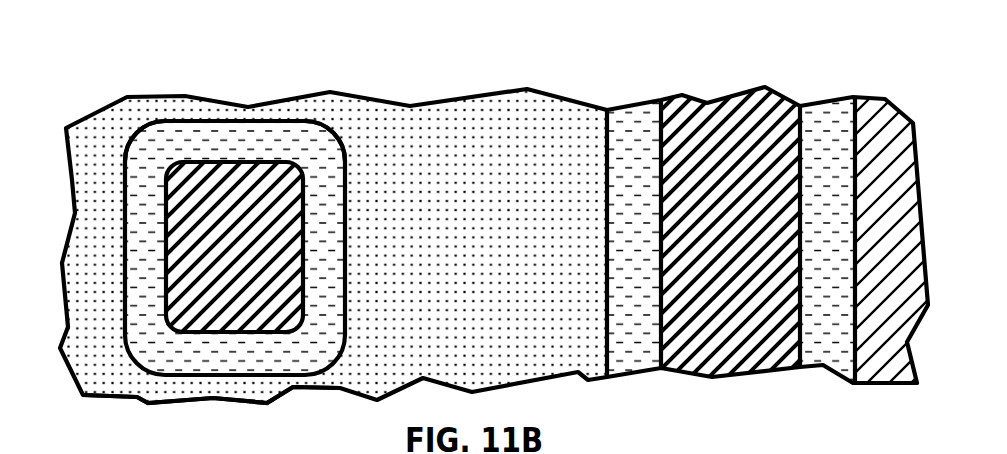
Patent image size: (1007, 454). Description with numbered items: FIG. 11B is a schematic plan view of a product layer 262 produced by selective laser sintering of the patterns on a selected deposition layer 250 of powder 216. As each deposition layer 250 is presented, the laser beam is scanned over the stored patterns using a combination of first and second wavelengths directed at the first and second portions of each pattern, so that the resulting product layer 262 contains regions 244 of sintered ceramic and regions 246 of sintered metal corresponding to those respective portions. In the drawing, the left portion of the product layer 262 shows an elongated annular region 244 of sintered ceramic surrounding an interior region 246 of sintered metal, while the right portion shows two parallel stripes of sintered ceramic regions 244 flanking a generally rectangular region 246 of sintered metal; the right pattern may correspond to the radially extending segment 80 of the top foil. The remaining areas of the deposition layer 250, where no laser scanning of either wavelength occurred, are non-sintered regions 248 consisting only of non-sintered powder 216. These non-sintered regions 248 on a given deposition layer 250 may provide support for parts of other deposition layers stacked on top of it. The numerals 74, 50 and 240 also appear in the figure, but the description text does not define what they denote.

The deposition layer 250 is at (156, 37).
The first portion 74 is at (358, 127).
The radially extending segment 80 is at (585, 127).
The powder 216 is at (495, 223).
The non-sintered regions 248 is at (465, 113).
The regions of sintered ceramic 244 is at (320, 222).
The regions of sintered metal 246 is at (267, 282).
The product layer 262 is at (801, 69).
The housing 50 is at (185, 420).
The electrical feedthrough 240 is at (185, 420).